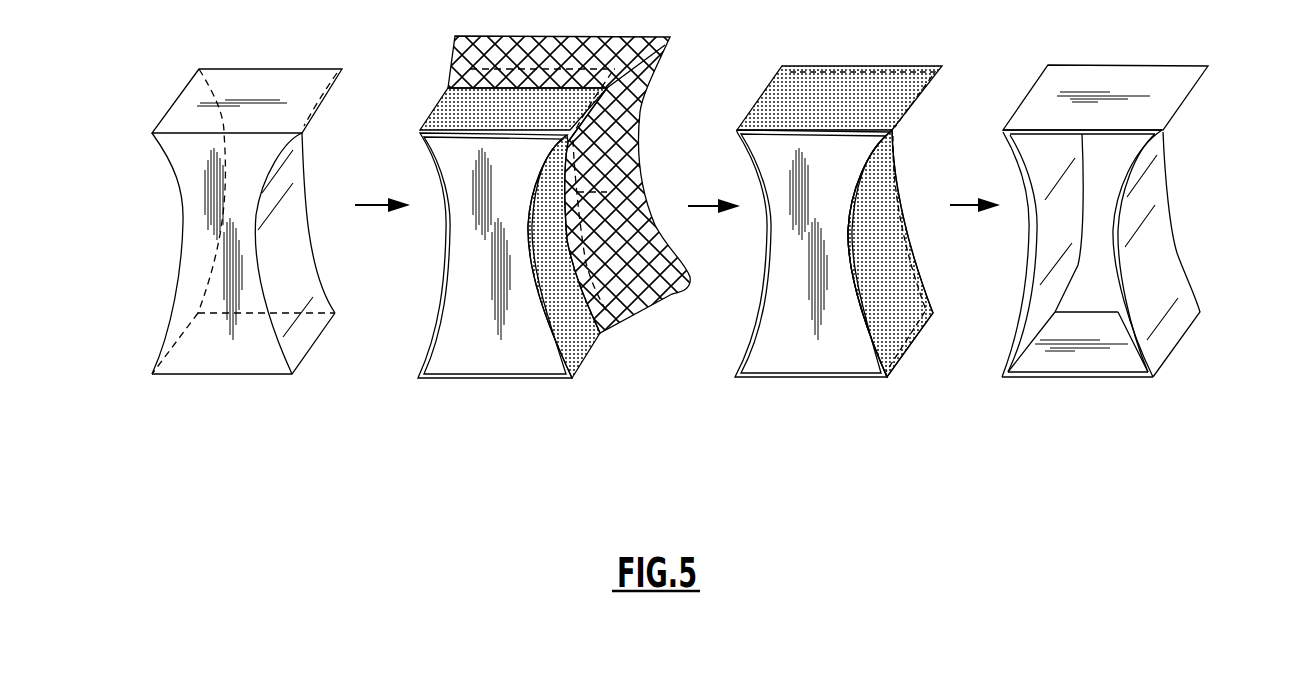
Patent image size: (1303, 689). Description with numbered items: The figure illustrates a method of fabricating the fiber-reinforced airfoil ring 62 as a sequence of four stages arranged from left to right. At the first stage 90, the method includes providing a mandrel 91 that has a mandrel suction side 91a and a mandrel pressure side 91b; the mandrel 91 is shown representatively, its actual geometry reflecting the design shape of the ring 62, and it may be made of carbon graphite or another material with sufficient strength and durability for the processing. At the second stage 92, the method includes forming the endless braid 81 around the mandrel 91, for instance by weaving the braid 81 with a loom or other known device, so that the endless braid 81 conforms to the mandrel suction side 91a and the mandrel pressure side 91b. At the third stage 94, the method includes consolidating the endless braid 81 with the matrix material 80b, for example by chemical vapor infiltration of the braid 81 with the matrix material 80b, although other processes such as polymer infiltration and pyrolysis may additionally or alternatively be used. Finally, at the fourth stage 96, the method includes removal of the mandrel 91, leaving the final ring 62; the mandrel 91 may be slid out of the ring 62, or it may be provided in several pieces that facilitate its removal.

The mandrel providing step 90 is at (229, 397).
The mandrel 91 is at (304, 58).
The mandrel suction side 91a is at (282, 252).
The mandrel pressure side 91b is at (181, 222).
The endless braid 81 is at (452, 113).
The matrix material 80b is at (873, 262).
The braid forming step 92 is at (489, 397).
The consolidating step 94 is at (819, 397).
The mandrel removal step 96 is at (1120, 259).
The fiber-reinforced airfoil ring 62 is at (1162, 350).